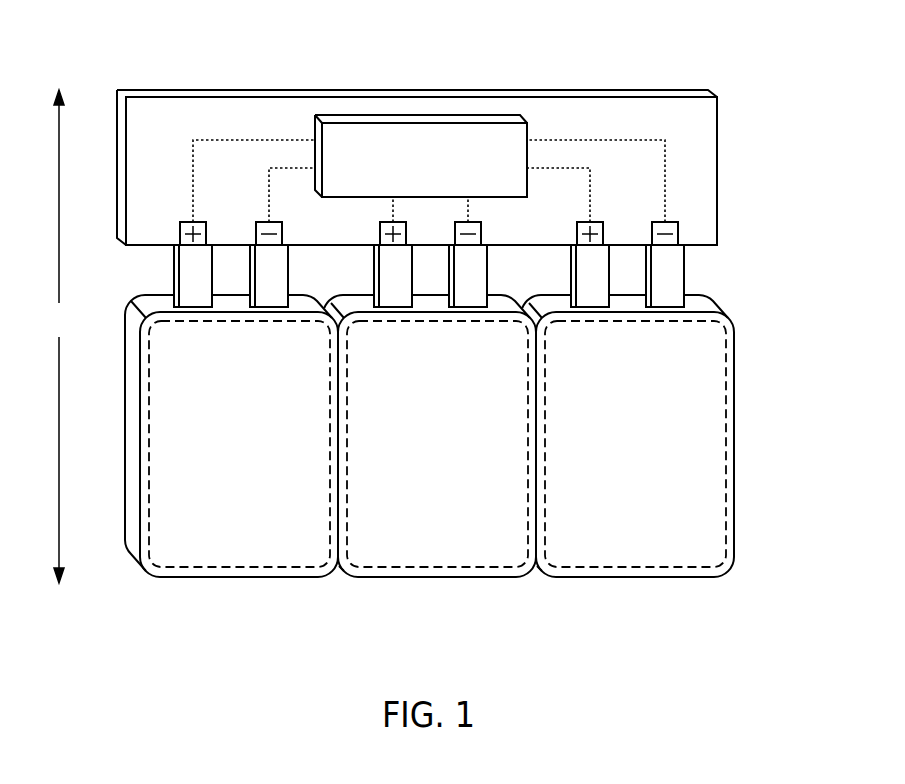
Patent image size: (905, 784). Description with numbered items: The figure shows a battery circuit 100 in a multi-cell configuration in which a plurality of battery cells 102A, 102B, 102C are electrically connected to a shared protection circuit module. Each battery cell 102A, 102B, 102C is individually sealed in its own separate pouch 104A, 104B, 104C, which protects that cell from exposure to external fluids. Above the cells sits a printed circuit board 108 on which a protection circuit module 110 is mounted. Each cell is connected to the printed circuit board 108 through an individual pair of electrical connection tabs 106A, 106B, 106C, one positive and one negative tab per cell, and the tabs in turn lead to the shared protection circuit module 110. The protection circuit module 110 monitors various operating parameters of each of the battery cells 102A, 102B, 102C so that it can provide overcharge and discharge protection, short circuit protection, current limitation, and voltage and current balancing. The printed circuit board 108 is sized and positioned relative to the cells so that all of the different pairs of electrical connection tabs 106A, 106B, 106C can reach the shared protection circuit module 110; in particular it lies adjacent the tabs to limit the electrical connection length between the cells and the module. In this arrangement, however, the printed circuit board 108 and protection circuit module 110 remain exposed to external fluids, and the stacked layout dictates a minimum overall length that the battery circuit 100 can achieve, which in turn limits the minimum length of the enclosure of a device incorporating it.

The battery circuit 100 is at (417, 329).
The battery cell 102A is at (238, 567).
The battery cell 102B is at (435, 567).
The battery cell 102C is at (633, 567).
The pouch 104A is at (313, 577).
The pouch 104B is at (508, 577).
The pouch 104C is at (705, 577).
The pair of electrical connection tabs 106A is at (299, 265).
The pair of electrical connection tabs 106B is at (494, 265).
The pair of electrical connection tabs 106C is at (692, 265).
The printed circuit board 108 is at (207, 90).
The protection circuit module 110 is at (418, 115).